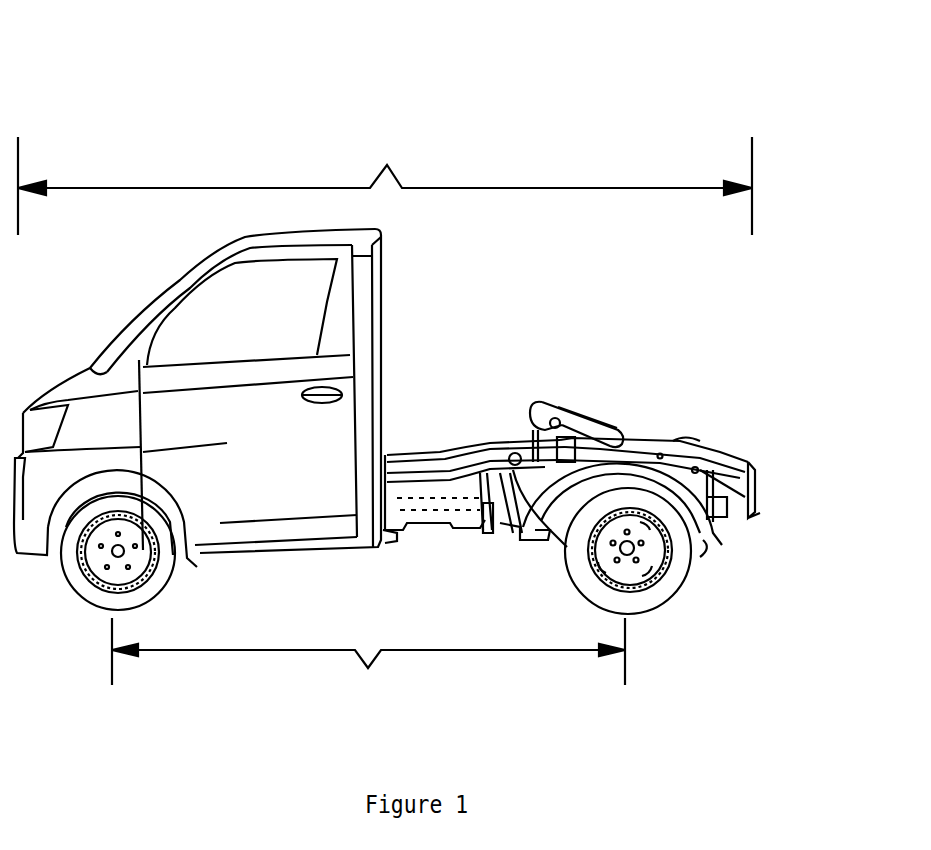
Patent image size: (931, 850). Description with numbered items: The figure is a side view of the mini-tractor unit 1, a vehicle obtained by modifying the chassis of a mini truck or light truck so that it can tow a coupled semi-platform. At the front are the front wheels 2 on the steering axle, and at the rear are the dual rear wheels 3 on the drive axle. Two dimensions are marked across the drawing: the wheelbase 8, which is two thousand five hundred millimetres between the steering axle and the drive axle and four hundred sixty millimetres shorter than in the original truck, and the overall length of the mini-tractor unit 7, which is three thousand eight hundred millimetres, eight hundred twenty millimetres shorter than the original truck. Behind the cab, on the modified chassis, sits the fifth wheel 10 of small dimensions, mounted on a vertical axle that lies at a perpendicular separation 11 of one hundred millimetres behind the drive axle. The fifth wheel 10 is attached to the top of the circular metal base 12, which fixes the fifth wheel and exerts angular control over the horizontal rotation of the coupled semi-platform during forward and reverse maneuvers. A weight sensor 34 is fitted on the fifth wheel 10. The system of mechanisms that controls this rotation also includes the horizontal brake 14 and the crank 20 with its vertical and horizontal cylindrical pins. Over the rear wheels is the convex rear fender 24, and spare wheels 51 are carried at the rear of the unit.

The mini-tractor unit 1 is at (185, 80).
The front wheels 2 is at (64, 590).
The dual rear wheels 3 is at (682, 593).
The length of the mini-tractor unit 7 is at (385, 171).
The wheelbase 8 is at (368, 671).
The fifth wheel 10 is at (563, 400).
The perpendicular separation 11 is at (532, 445).
The base for fifth wheel 12 is at (632, 438).
The horizontal brake 14 is at (547, 417).
The crank 20 is at (490, 443).
The convex rear fender 24 is at (752, 514).
The weight sensor 34 is at (523, 477).
The spare wheels 51 is at (723, 523).